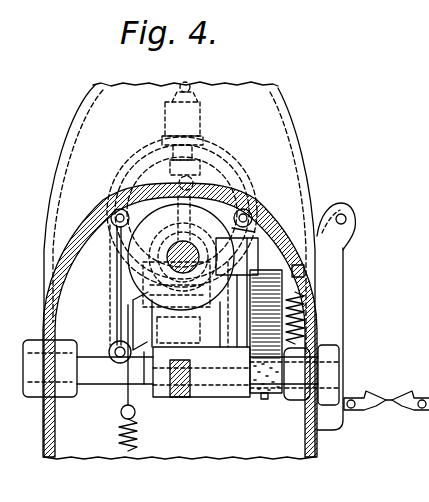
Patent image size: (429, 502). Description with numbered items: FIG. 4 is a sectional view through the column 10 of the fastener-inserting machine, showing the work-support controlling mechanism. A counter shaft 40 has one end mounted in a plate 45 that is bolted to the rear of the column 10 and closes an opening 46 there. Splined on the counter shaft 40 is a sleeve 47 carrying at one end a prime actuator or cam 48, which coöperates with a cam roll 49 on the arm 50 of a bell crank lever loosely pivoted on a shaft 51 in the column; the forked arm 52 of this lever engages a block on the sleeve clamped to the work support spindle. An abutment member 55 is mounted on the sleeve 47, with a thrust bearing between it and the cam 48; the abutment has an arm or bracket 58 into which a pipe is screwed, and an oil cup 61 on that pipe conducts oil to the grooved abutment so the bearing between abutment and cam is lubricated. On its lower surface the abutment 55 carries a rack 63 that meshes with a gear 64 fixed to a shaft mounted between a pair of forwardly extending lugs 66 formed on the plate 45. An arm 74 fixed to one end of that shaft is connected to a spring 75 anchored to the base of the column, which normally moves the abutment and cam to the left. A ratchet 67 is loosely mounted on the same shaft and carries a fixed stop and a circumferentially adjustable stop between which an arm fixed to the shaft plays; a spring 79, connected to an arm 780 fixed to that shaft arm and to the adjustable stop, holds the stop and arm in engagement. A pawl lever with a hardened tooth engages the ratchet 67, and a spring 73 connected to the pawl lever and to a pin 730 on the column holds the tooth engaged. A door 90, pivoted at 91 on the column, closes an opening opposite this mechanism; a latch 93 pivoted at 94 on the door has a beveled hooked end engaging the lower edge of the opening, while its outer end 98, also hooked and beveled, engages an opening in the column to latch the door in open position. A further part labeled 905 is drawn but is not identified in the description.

The column 10 is at (84, 112).
The counter shaft 40 is at (180, 314).
The plate 45 is at (115, 290).
The opening 46 is at (118, 309).
The sleeve 47 is at (172, 170).
The prime actuator or cam 48 is at (130, 320).
The cam roll 49 is at (255, 232).
The arm of bell crank lever 50 is at (306, 251).
The shaft 51 is at (181, 372).
The forked arm 52 is at (184, 398).
The abutment member 55 is at (138, 257).
The arm or bracket 58 is at (197, 173).
The oil cup 61 is at (166, 103).
The rack 63 is at (210, 396).
The gear 64 is at (218, 398).
The lugs 66 is at (144, 372).
The ratchet 67 is at (278, 281).
The spring 73 is at (264, 399).
The arm 74 is at (126, 398).
The spring 75 is at (118, 442).
The spring 79 is at (299, 312).
The door 90 is at (337, 323).
The door pivot 91 is at (337, 212).
The latch 93 is at (362, 412).
The latch pivot 94 is at (353, 399).
The outer end of latch 98 is at (390, 396).
The pin 730 is at (297, 380).
The arm 780 is at (304, 271).
The part 905 is at (418, 277).